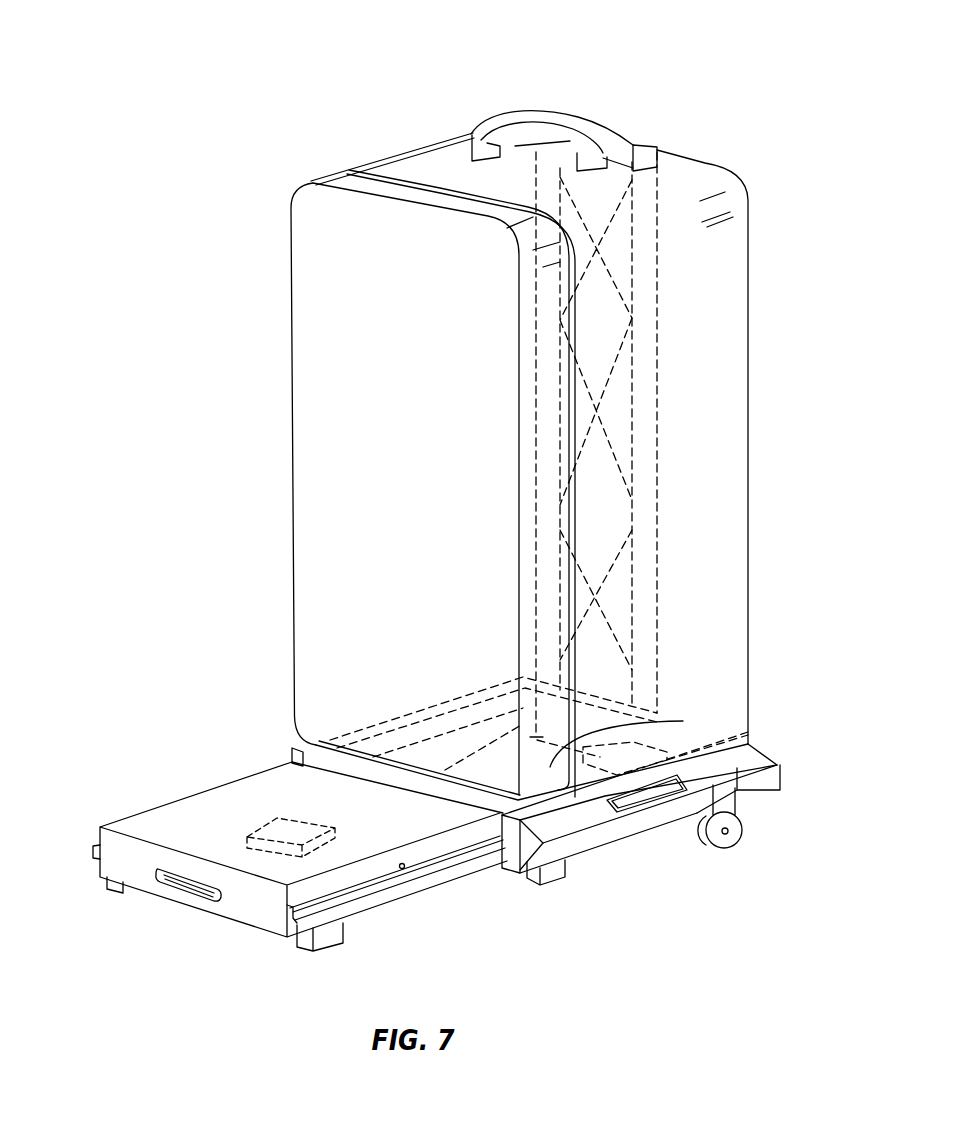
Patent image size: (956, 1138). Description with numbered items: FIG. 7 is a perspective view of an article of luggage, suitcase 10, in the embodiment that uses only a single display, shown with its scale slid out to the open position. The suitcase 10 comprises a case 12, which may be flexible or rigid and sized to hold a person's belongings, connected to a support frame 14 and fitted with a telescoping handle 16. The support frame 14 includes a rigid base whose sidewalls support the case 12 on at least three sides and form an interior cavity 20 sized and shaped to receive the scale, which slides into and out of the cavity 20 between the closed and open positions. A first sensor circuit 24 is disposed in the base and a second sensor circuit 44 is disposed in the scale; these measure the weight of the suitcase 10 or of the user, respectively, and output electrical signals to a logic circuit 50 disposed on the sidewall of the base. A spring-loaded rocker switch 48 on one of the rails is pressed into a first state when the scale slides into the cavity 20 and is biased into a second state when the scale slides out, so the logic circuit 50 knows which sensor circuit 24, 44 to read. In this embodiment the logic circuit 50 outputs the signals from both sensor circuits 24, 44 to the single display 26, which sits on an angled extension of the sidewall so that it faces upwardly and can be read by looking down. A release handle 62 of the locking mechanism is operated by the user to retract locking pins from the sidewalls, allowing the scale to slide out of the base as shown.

The suitcase 10 is at (160, 76).
The case 12 is at (717, 353).
The support frame 14 is at (657, 570).
The telescoping handle 16 is at (620, 133).
The interior cavity 20 is at (683, 721).
The first sensor circuit 24 is at (737, 800).
The display 26 is at (633, 798).
The second sensor circuit 44 is at (263, 830).
The spring-loaded rocker switch 48 is at (402, 866).
The logic circuit 50 is at (737, 787).
The release handle 62 is at (182, 886).